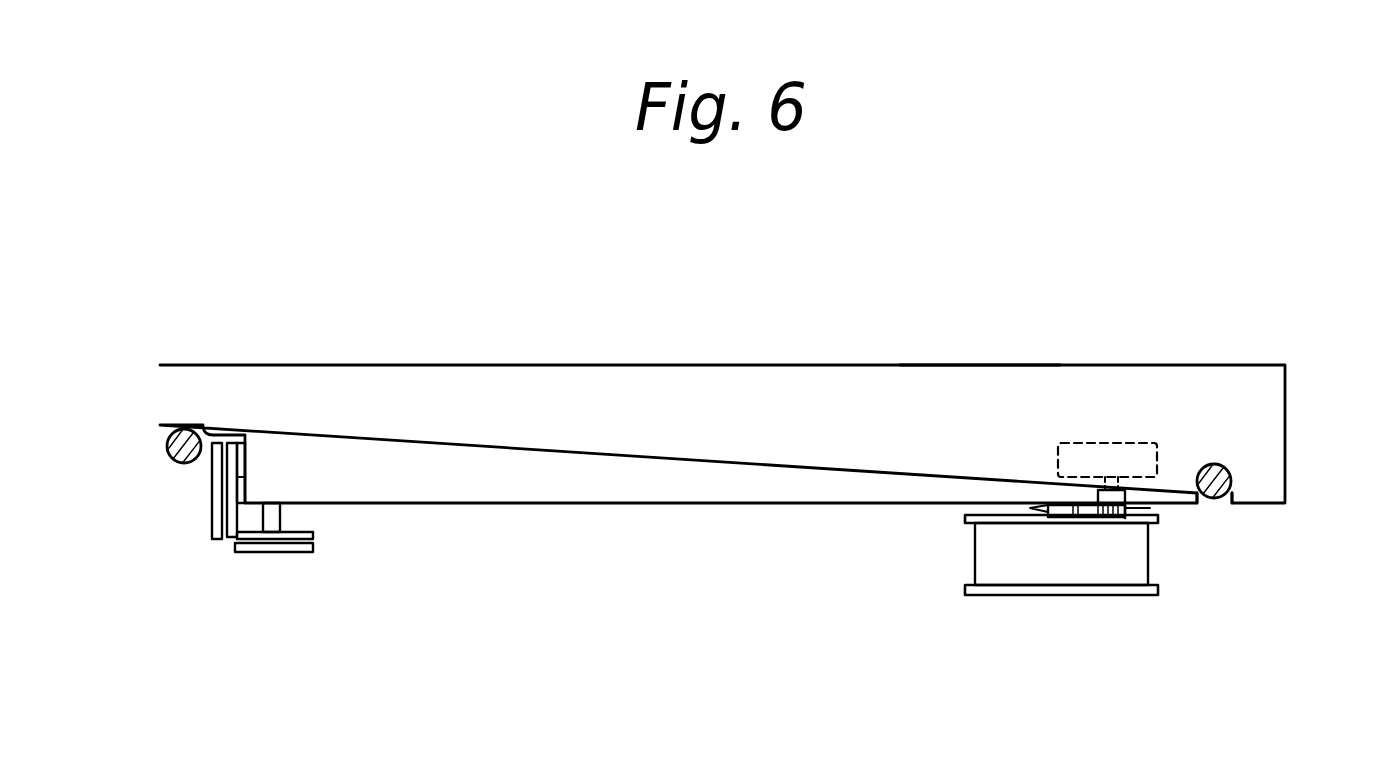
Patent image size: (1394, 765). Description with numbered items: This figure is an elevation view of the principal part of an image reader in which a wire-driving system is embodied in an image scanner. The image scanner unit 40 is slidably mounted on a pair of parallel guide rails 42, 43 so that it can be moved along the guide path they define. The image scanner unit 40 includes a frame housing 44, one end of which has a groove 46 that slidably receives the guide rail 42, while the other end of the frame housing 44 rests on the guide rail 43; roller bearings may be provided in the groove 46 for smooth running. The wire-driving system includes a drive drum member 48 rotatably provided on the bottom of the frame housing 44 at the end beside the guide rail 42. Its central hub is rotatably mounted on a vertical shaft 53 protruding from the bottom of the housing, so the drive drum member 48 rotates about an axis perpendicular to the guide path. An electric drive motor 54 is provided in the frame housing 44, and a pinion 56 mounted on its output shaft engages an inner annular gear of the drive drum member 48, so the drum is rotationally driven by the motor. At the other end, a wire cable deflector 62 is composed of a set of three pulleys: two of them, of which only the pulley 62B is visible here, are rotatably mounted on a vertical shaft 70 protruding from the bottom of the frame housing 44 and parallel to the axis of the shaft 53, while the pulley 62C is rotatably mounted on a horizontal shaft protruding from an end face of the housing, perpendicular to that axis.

The image scanner unit 40 is at (699, 312).
The frame housing 44 is at (985, 352).
The guide rail 43 is at (178, 463).
The guide rail 42 is at (1213, 500).
The groove 46 is at (1227, 503).
The wire cable deflector 62 is at (231, 566).
The pulley 62C is at (210, 520).
The pulley 62B is at (290, 553).
The vertical shaft 70 is at (283, 520).
The vertical shaft 53 is at (1030, 508).
The electric drive motor 54 is at (1125, 443).
The drive drum member 48 is at (960, 555).
The pinion 56 is at (1130, 508).